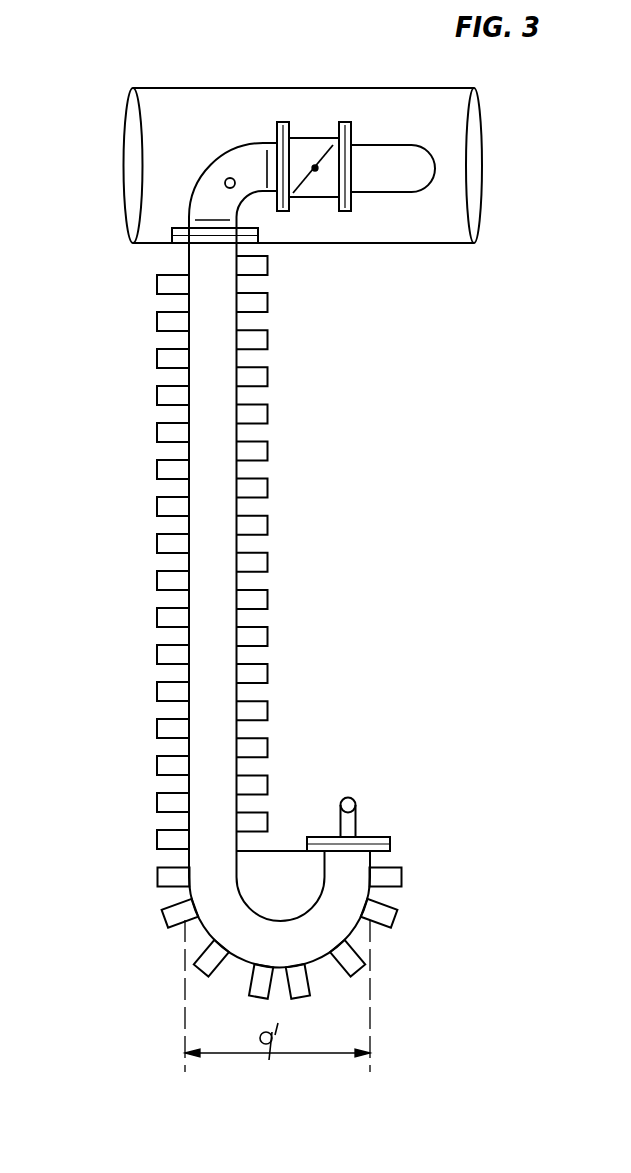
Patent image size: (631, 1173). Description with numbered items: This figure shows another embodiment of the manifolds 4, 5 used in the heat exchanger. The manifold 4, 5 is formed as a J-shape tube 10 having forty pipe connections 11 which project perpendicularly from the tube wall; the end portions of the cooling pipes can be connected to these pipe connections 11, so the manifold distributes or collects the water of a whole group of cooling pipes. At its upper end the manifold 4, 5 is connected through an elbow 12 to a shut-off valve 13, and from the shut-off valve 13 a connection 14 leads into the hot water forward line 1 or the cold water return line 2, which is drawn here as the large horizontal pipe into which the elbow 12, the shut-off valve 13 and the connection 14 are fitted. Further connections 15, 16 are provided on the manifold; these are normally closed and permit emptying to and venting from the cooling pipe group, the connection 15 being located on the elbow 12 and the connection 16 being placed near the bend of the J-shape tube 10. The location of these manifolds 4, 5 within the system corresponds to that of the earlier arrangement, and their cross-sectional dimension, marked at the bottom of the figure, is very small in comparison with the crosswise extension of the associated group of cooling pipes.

The hot water forward line 1 is at (303, 144).
The cold water return line 2 is at (217, 117).
The manifold 4 is at (229, 613).
The manifold 5 is at (185, 632).
The U-shaped tube 10 is at (221, 509).
The pipe connections 11 is at (165, 472).
The elbow 12 is at (202, 207).
The shut-off valve 13 is at (315, 143).
The connection 14 is at (405, 160).
The connection 15 is at (223, 180).
The connection 16 is at (350, 802).